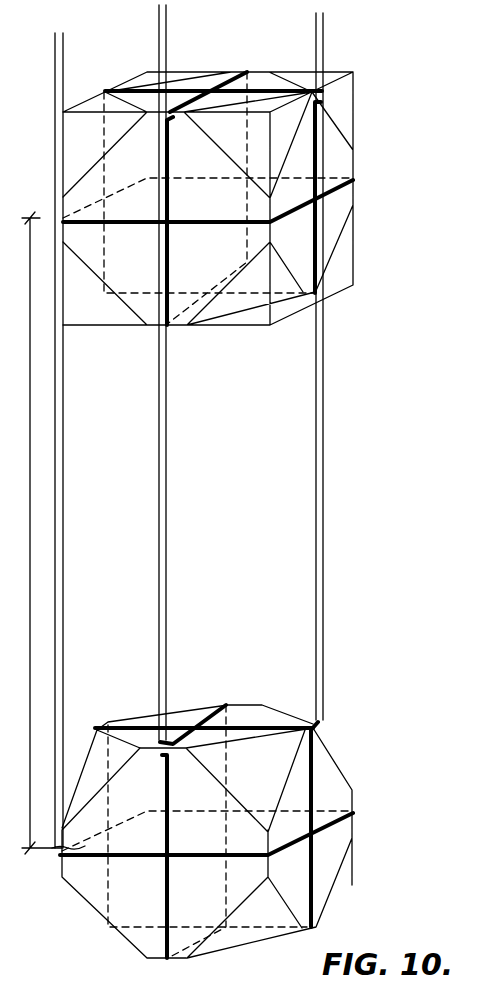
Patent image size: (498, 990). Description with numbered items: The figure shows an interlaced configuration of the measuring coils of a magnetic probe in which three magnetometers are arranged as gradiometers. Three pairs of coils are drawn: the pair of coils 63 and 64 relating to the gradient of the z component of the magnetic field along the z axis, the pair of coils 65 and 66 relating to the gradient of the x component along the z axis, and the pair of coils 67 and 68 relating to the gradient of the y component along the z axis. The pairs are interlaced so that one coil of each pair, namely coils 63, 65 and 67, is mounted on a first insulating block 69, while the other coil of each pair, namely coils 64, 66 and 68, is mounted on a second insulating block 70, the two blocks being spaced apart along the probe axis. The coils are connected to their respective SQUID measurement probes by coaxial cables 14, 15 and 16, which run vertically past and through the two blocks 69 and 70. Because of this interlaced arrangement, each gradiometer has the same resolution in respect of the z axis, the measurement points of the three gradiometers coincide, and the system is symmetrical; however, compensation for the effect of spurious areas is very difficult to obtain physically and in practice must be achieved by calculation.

The coaxial cable 14 is at (65, 52).
The coaxial cable 15 is at (168, 42).
The coaxial cable 16 is at (325, 41).
The coil 63 is at (83, 860).
The coil 64 is at (355, 196).
The coil 65 is at (318, 762).
The coil 66 is at (318, 165).
The coil 67 is at (210, 718).
The coil 68 is at (240, 72).
The first insulating block 69 is at (335, 865).
The second insulating block 70 is at (348, 250).